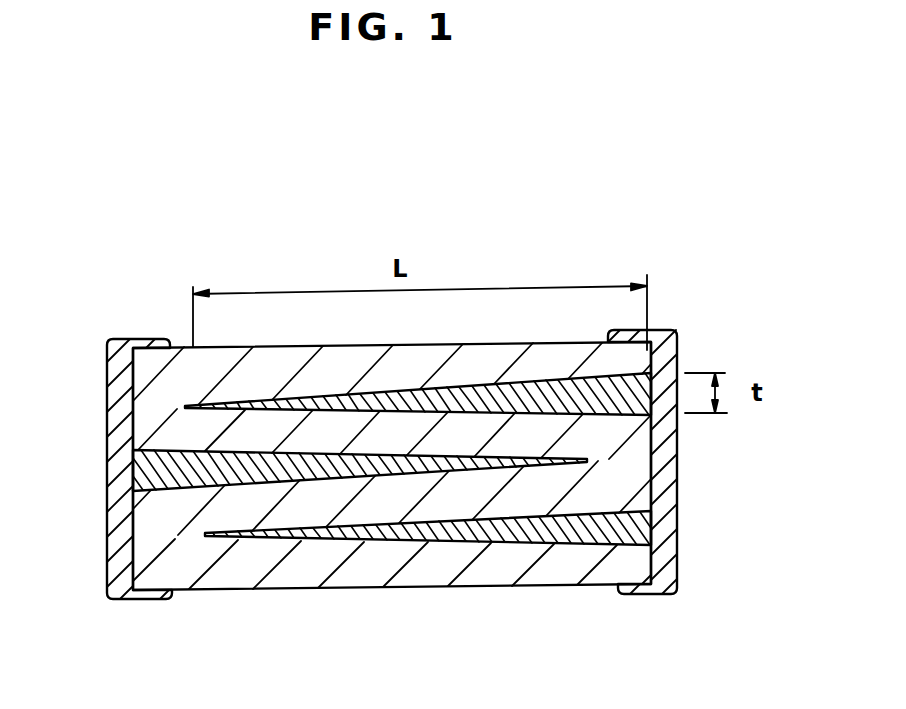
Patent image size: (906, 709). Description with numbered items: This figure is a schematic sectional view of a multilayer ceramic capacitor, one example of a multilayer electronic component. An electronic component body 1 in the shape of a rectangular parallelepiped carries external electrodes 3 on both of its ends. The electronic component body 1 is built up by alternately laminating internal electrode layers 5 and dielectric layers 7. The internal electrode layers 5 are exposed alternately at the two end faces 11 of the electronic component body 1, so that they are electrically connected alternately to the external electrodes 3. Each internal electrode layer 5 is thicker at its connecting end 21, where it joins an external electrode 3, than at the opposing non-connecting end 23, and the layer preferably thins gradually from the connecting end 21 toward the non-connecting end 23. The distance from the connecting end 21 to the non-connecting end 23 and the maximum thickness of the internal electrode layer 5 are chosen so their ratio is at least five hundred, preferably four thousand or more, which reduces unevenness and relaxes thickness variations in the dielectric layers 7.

The electronic component body 1 is at (185, 346).
The external electrode 3 is at (110, 444).
The internal electrode layer 5 is at (435, 543).
The dielectric layer 7 is at (258, 508).
The end face 11 is at (125, 380).
The connecting end 21 is at (638, 402).
The non-connecting end 23 is at (170, 488).